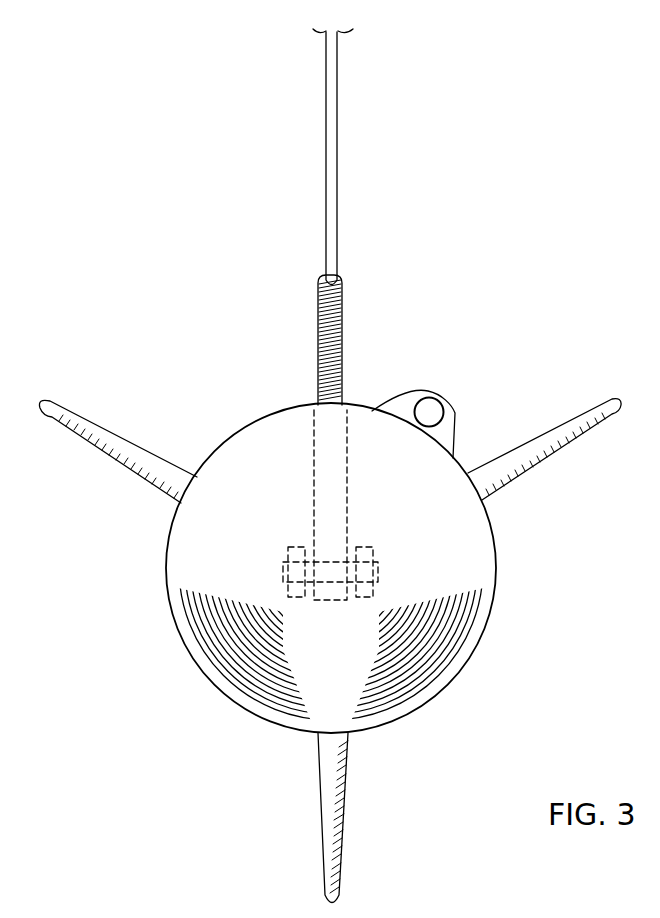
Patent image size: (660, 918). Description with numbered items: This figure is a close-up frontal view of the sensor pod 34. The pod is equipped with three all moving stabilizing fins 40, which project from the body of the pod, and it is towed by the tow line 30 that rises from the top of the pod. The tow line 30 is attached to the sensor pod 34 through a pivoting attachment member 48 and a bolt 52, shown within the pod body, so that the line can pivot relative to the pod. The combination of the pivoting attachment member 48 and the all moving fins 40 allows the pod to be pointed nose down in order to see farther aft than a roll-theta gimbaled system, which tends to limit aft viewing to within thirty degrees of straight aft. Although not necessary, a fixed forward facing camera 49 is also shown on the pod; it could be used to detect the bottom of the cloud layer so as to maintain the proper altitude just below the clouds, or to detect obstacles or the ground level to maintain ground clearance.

The tow line 30 is at (332, 168).
The sensor pod 34 is at (242, 705).
The all moving stabilizing fins 40 is at (115, 465).
The pivoting attachment member 48 is at (342, 398).
The fixed forward facing camera 49 is at (458, 413).
The bolt 52 is at (377, 570).